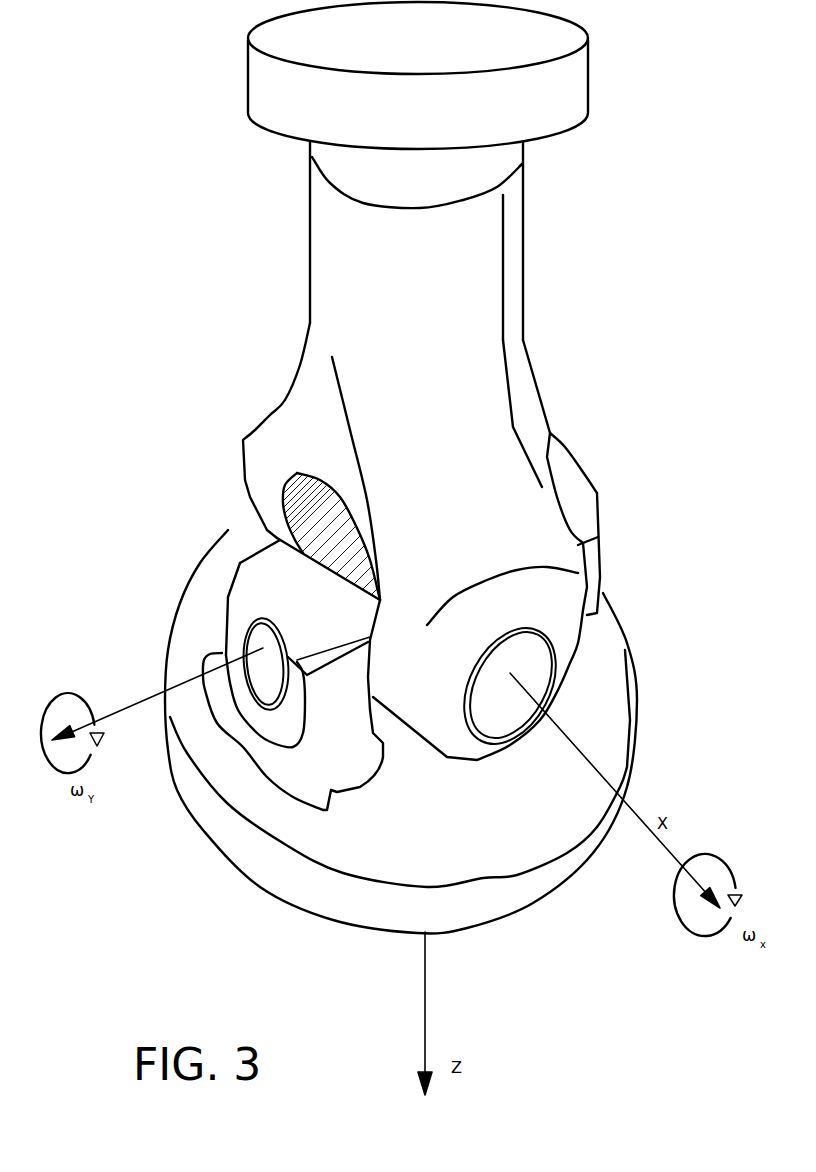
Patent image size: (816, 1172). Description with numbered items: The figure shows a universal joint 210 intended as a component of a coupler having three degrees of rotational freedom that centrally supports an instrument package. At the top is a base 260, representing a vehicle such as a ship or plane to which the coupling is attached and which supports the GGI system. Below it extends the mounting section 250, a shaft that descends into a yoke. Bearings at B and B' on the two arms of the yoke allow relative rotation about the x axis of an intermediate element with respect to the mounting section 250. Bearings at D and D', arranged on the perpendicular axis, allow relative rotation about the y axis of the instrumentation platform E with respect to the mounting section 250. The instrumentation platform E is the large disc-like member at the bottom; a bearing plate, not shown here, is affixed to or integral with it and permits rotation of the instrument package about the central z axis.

The universal joint 210 is at (482, 447).
The mounting section 250 is at (497, 152).
The base 260 is at (588, 70).
The bearing location B is at (545, 674).
The bearing location B' is at (283, 543).
The bearing location D is at (212, 655).
The bearing location D' is at (594, 524).
The instrumentation platform E is at (295, 873).